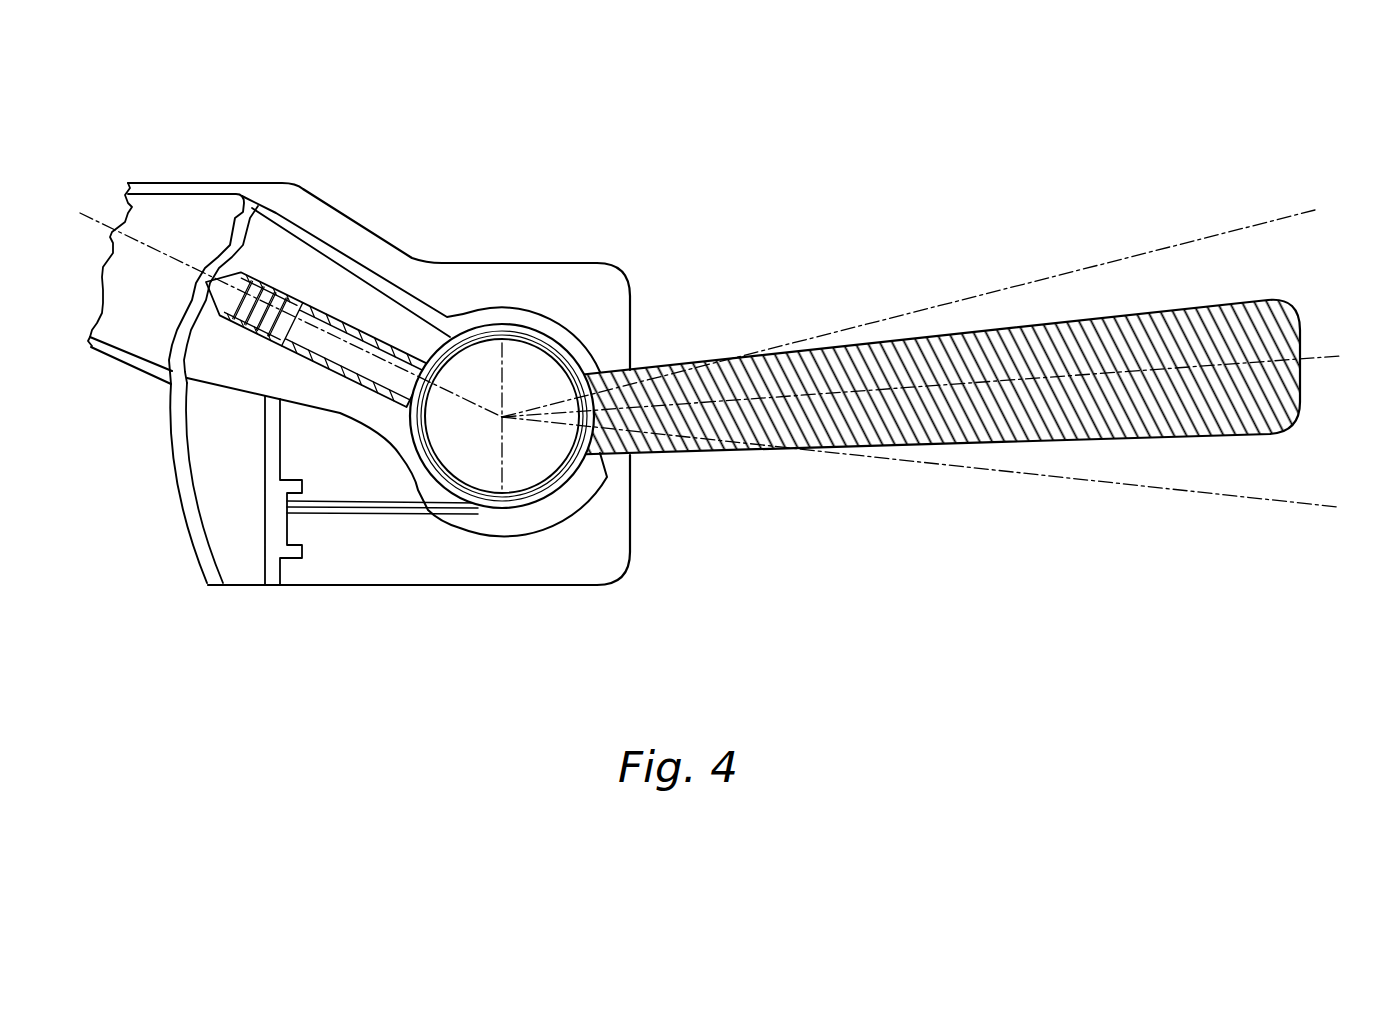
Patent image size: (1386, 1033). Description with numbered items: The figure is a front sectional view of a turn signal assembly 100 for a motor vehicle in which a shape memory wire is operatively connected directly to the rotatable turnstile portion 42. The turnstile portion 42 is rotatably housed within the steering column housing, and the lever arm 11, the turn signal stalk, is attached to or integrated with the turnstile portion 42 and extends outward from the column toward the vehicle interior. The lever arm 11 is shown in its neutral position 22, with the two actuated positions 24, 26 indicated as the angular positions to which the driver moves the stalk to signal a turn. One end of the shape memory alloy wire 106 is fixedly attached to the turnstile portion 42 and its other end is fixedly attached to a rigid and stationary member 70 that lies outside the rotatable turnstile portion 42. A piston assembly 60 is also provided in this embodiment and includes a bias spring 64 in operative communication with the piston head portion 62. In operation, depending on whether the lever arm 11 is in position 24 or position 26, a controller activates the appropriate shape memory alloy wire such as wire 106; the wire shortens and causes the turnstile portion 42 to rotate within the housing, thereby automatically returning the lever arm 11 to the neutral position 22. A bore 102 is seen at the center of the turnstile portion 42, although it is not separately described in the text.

The lever arm 11 is at (1263, 434).
The neutral position 22 is at (1328, 357).
The lever arm position 24 is at (1280, 503).
The lever arm position 26 is at (1277, 220).
The turnstile portion 42 is at (514, 329).
The piston assembly 60 is at (328, 259).
The piston head portion 62 is at (184, 382).
The bias spring 64 is at (309, 297).
The rigid and stationary member 70 is at (265, 510).
The turn signal assembly 100 is at (471, 375).
The pivot bore 102 is at (523, 367).
The shape memory alloy wire 106 is at (387, 514).